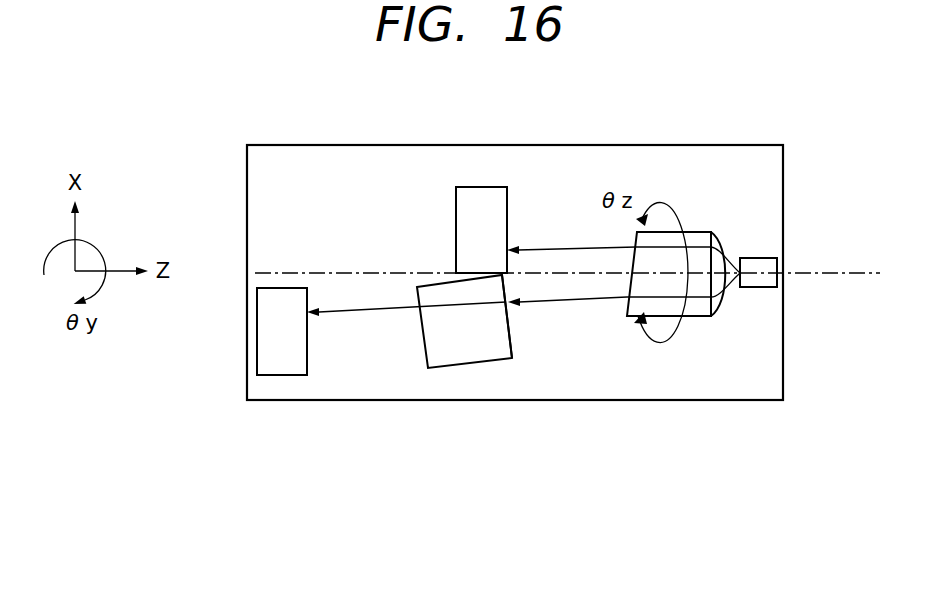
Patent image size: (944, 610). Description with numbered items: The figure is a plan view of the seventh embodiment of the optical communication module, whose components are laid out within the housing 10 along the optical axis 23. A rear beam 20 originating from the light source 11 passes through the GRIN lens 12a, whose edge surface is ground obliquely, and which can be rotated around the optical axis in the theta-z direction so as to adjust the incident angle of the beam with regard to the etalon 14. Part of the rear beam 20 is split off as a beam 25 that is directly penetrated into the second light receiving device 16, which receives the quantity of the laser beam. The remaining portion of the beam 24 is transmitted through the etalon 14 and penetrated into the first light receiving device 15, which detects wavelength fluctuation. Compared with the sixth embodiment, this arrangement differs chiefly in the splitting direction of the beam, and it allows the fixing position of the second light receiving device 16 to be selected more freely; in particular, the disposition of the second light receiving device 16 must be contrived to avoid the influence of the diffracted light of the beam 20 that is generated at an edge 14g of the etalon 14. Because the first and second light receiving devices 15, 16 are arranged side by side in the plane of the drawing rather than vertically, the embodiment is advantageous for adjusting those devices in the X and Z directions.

The housing 10 is at (292, 393).
The light source 11 is at (752, 258).
The GRIN lens 12a is at (690, 232).
The etalon 14 is at (478, 363).
The edge of the etalon 14g is at (505, 277).
The first light receiving device 15 is at (257, 347).
The second light receiving device 16 is at (456, 190).
The rear beam 20 is at (613, 297).
The optical axis 23 is at (568, 273).
The remaining beam 24 is at (388, 308).
The beam 25 is at (516, 246).